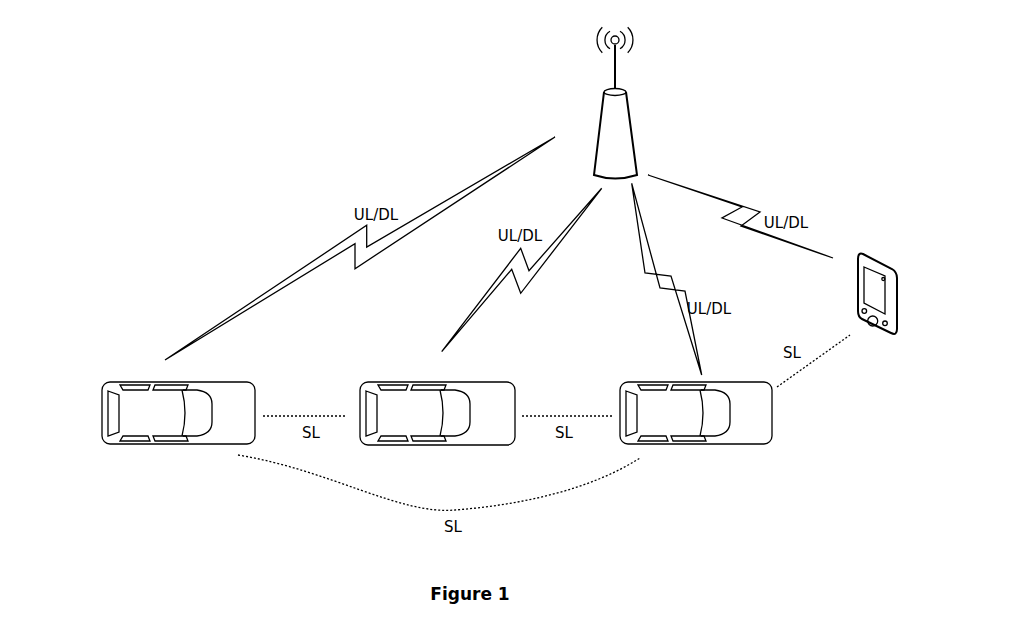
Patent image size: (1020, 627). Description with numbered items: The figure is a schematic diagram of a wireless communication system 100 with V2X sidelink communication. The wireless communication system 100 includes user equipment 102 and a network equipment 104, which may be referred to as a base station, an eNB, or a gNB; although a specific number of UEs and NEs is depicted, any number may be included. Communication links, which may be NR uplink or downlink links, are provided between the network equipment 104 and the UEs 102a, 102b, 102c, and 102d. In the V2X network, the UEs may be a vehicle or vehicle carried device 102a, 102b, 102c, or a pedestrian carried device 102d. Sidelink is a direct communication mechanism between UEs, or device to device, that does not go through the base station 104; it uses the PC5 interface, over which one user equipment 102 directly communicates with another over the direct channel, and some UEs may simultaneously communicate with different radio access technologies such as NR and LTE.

The wireless communication system 100 is at (790, 67).
The user equipment 102 is at (407, 436).
The vehicle or vehicle carried device 102a is at (178, 436).
The vehicle or vehicle carried device 102b is at (437, 436).
The vehicle or vehicle carried device 102c is at (696, 436).
The pedestrian carried device 102d is at (879, 326).
The network equipment 104 is at (644, 102).